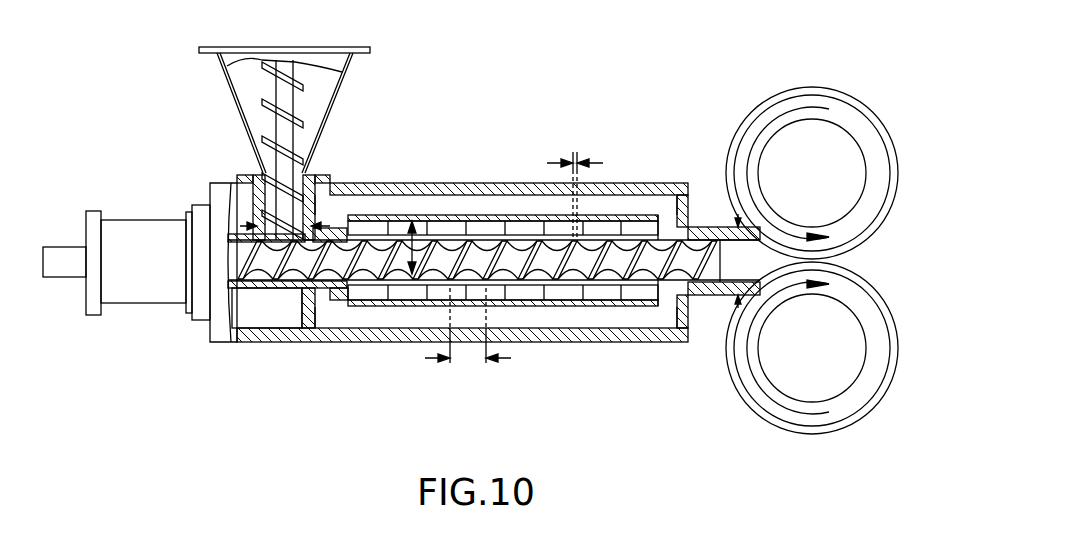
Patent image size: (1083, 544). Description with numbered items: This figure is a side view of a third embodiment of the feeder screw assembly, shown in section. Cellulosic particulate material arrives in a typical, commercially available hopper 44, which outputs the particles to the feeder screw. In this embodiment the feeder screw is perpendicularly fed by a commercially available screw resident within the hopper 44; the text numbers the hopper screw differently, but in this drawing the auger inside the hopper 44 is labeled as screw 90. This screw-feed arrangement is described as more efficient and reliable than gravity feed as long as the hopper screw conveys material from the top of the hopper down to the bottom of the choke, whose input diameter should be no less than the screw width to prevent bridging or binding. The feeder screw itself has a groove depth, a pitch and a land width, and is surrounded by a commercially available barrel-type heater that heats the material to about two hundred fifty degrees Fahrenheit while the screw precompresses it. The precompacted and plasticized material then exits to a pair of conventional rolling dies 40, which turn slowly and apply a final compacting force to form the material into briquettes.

The rolling dies 40 is at (785, 98).
The hopper 44 is at (244, 125).
The auger 90 is at (300, 112).